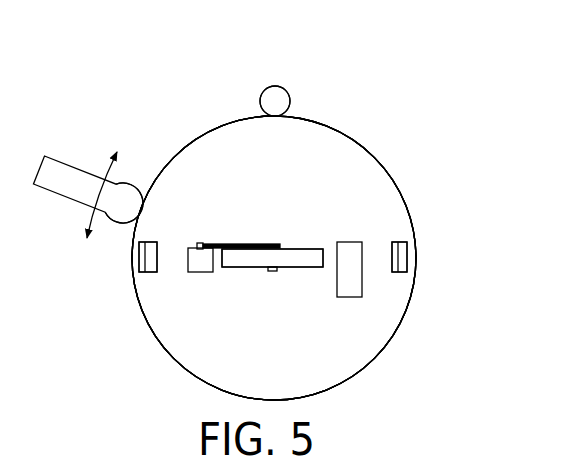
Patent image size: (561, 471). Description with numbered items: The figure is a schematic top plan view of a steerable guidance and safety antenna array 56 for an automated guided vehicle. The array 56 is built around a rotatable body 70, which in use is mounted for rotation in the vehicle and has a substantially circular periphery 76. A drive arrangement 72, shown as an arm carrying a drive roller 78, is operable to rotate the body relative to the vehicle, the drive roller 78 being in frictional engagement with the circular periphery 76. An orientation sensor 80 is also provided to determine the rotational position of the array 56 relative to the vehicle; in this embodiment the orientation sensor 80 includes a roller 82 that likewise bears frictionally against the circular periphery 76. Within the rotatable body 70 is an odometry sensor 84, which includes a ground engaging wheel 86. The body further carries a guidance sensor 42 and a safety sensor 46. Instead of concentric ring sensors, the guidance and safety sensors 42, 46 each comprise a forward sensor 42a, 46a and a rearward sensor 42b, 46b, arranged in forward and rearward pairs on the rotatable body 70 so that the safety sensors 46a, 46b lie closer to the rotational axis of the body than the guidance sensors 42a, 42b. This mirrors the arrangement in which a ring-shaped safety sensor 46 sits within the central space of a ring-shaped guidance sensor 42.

The guidance sensor 42 is at (125, 298).
The safety sensor 46 is at (274, 258).
The forward sensor 42a is at (407, 255).
The rearward sensor 42b is at (139, 257).
The forward sensor 46a is at (392, 242).
The rearward sensor 46b is at (155, 242).
The steerable guidance and safety antenna array 56 is at (362, 120).
The rotatable body 70 is at (369, 164).
The drive arrangement 72 is at (70, 145).
The circular periphery 76 is at (390, 341).
The drive roller 78 is at (123, 185).
The orientation sensor 80 is at (286, 72).
The roller 82 is at (259, 100).
The odometry sensor 84 is at (287, 235).
The ground engaging wheel 86 is at (302, 267).